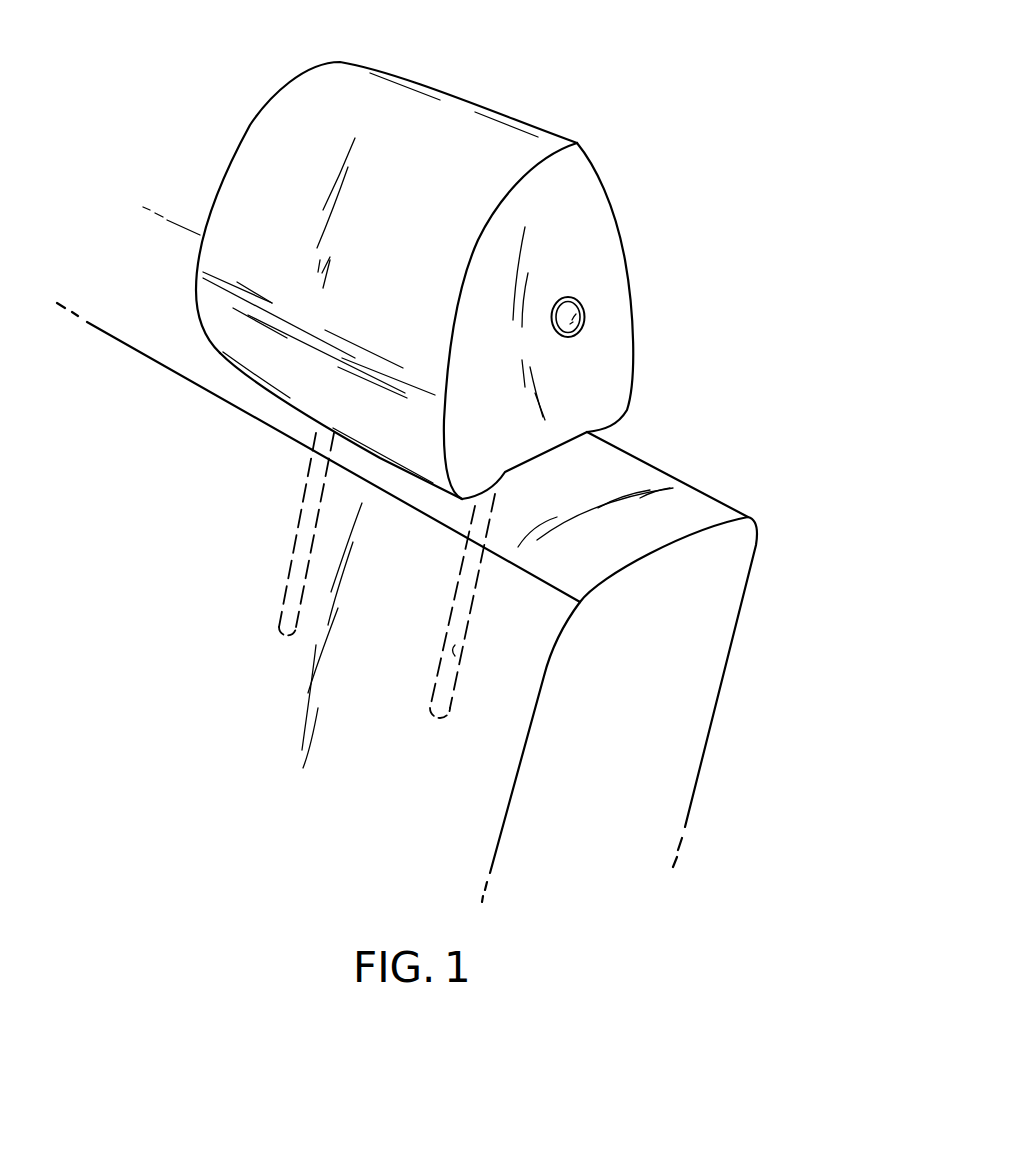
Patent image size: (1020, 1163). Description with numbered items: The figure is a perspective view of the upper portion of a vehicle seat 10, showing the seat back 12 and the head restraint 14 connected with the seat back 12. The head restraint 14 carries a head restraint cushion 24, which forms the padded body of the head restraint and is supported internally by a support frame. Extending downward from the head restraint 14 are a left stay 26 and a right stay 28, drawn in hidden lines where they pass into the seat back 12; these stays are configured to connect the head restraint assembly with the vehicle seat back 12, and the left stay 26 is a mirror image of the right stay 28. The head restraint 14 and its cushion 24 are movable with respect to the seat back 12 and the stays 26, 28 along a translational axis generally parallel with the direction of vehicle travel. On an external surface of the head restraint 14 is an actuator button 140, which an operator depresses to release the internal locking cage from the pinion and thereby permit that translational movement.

The vehicle seat 10 is at (202, 106).
The seat back 12 is at (697, 705).
The head restraint 14 is at (497, 99).
The head restraint cushion 24 is at (583, 215).
The left stay 26 is at (450, 590).
The right stay 28 is at (296, 513).
The actuator button 140 is at (573, 315).